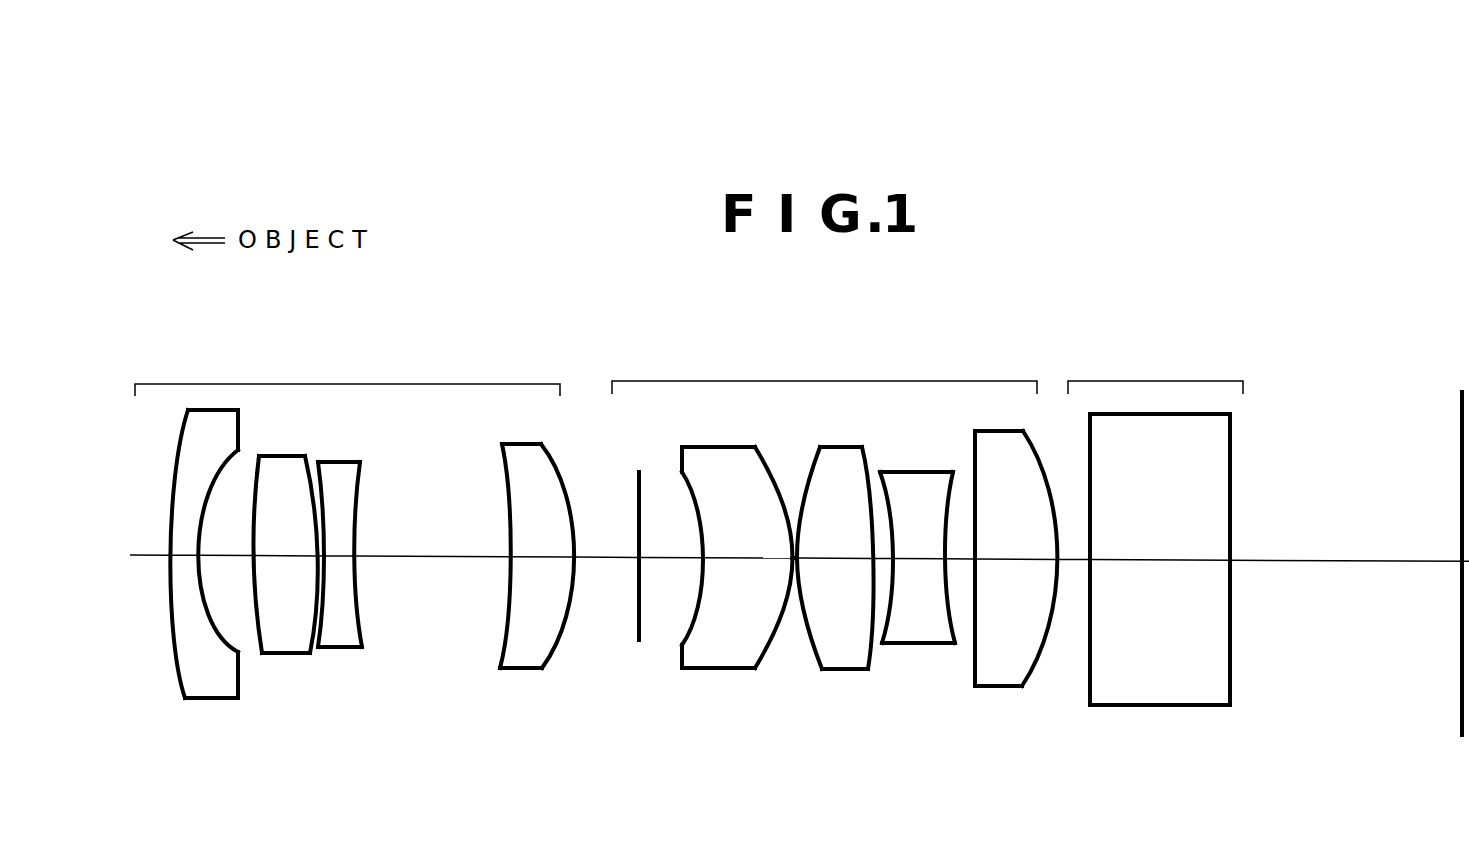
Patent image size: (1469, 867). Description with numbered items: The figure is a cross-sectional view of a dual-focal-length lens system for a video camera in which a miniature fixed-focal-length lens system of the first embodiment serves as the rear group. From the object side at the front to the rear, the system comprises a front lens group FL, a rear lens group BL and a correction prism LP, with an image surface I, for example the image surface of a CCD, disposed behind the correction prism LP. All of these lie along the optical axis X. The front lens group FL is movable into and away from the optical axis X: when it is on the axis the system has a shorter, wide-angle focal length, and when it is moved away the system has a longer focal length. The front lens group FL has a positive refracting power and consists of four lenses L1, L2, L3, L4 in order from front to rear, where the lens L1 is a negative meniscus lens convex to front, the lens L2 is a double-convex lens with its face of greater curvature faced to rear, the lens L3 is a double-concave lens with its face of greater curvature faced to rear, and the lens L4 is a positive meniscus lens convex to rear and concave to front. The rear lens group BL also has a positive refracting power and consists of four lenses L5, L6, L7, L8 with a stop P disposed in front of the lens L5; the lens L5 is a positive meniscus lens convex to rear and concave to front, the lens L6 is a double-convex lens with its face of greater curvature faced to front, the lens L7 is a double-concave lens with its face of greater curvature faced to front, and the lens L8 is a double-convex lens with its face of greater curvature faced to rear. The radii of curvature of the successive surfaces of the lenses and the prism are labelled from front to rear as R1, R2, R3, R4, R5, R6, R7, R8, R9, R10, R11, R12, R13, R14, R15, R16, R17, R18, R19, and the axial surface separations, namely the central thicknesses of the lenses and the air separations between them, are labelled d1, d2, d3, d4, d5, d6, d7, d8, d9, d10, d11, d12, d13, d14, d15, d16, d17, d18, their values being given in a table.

The front lens group FL is at (347, 367).
The rear lens group BL is at (824, 366).
The correction prism LP is at (1155, 521).
The lens L1 is at (199, 700).
The lens L2 is at (290, 655).
The lens L3 is at (339, 649).
The lens L4 is at (516, 671).
The lens L5 is at (690, 671).
The lens L6 is at (839, 672).
The lens L7 is at (910, 646).
The lens L8 is at (1006, 689).
The radius of curvature of refracting surface R1 is at (175, 663).
The radius of curvature of refracting surface R2 is at (229, 635).
The radius of curvature of refracting surface R3 is at (254, 472).
The radius of curvature of refracting surface R4 is at (313, 478).
The radius of curvature of refracting surface R5 is at (320, 475).
The radius of curvature of refracting surface R6 is at (361, 485).
The radius of curvature of refracting surface R7 is at (502, 466).
The radius of curvature of refracting surface R8 is at (560, 468).
The radius of curvature of refracting surface R9 is at (637, 598).
The radius of curvature of refracting surface R10 is at (684, 618).
The radius of curvature of refracting surface R11 is at (762, 659).
The radius of curvature of refracting surface R12 is at (808, 643).
The radius of curvature of refracting surface R13 is at (866, 672).
The radius of curvature of refracting surface R14 is at (877, 636).
The radius of curvature of refracting surface R15 is at (952, 636).
The radius of curvature of refracting surface R16 is at (973, 668).
The radius of curvature of refracting surface R17 is at (1031, 669).
The radius of curvature of refracting surface R18 is at (1088, 683).
The radius of curvature of refracting surface R19 is at (1232, 682).
The axial surface separation d1 is at (183, 555).
The axial surface separation d2 is at (232, 555).
The axial surface separation d3 is at (278, 556).
The axial surface separation d4 is at (338, 556).
The axial surface separation d5 is at (355, 556).
The axial surface separation d6 is at (451, 556).
The axial surface separation d7 is at (529, 557).
The axial surface separation d8 is at (602, 557).
The axial surface separation d9 is at (660, 557).
The axial surface separation d10 is at (744, 558).
The axial surface separation d11 is at (794, 544).
The axial surface separation d12 is at (828, 558).
The axial surface separation d13 is at (879, 545).
The axial surface separation d14 is at (915, 558).
The axial surface separation d15 is at (962, 558).
The axial surface separation d16 is at (1004, 559).
The axial surface separation d17 is at (1068, 559).
The axial surface separation d18 is at (1166, 560).
The stop P is at (629, 533).
The optical axis X is at (1303, 560).
The image surface I is at (1456, 349).